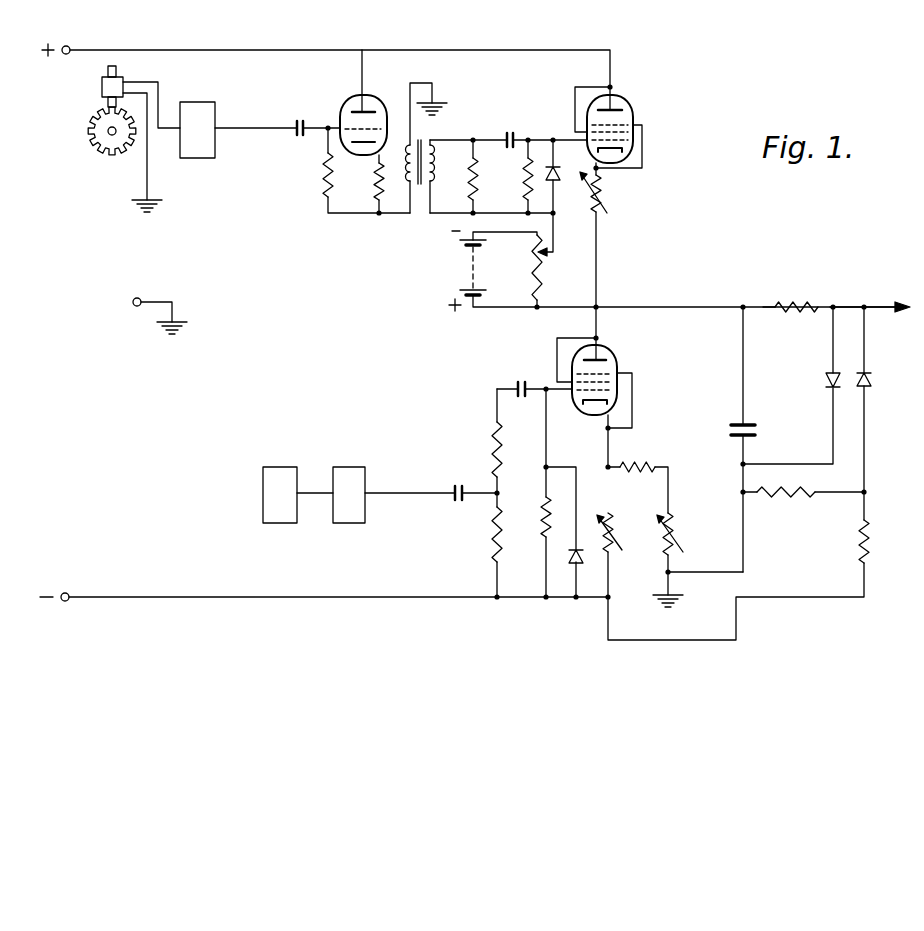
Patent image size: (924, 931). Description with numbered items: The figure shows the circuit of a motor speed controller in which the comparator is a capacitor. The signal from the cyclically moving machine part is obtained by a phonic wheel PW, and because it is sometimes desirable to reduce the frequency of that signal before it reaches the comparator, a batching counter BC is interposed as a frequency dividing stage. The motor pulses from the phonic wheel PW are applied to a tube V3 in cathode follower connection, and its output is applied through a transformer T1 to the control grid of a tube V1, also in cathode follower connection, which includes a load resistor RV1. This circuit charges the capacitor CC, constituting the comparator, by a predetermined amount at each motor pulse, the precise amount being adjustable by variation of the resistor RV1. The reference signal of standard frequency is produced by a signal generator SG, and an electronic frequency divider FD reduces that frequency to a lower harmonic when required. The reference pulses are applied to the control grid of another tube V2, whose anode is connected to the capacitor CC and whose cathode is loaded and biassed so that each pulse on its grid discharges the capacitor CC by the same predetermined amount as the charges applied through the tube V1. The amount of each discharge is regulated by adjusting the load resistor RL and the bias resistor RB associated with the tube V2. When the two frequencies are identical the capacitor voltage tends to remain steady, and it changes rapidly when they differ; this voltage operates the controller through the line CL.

The phonic wheel PW is at (88, 143).
The batching counter BC is at (194, 107).
The tube V3 is at (344, 104).
The transformer T1 is at (423, 140).
The tube V1 is at (632, 110).
The load resistor RV1 is at (605, 193).
The line CL is at (880, 305).
The capacitor CC is at (757, 439).
The tube V2 is at (612, 359).
The signal generator SG is at (284, 462).
The frequency divider FD is at (351, 462).
The load resistor RL is at (619, 532).
The bias resistor RB is at (679, 534).